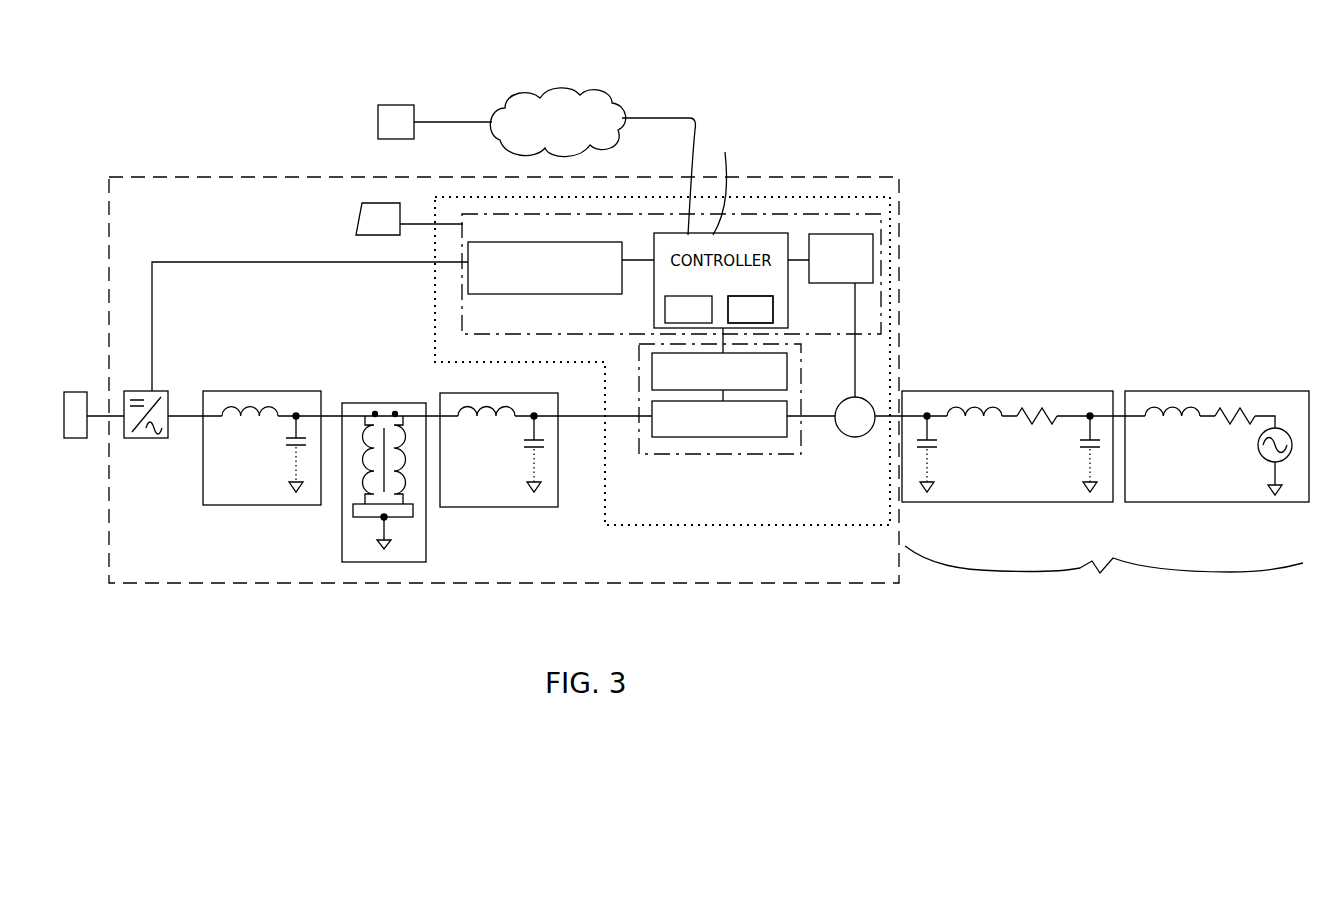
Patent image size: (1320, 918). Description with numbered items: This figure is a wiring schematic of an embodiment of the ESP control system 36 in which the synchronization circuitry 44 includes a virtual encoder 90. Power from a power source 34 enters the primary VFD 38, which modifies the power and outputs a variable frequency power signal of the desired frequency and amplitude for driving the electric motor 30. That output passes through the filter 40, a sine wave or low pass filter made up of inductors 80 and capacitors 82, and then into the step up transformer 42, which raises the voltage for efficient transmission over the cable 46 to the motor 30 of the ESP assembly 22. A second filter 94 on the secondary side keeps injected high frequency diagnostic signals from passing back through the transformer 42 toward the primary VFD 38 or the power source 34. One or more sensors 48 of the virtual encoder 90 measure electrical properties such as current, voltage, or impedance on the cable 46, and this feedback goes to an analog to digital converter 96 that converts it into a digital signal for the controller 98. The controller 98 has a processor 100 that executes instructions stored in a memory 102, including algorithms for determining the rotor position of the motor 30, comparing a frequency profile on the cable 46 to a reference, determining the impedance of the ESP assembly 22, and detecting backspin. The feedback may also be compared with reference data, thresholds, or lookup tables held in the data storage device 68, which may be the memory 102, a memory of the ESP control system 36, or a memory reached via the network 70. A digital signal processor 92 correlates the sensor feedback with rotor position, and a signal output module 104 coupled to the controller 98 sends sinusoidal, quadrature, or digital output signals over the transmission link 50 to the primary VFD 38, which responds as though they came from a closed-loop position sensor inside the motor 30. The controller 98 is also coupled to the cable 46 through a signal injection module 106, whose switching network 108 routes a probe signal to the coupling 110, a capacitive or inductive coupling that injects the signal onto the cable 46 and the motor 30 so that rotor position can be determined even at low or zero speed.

The ESP assembly 22 is at (1104, 578).
The electric motor 30 is at (1218, 389).
The power source 34 is at (77, 386).
The ESP control system 36 is at (828, 177).
The primary VFD 38 is at (128, 386).
The filter 40 is at (260, 389).
The step up transformer 42 is at (383, 401).
The synchronization circuitry 44 is at (545, 561).
The cable 46 is at (1008, 389).
The sensors 48 is at (855, 438).
The transmission link 50 is at (283, 258).
The data storage device 68 is at (378, 123).
The network 70 is at (604, 86).
The inductors 80 is at (250, 405).
The capacitors 82 is at (290, 449).
The virtual encoder 90 is at (700, 530).
The digital signal processor 92 is at (880, 216).
The filter 94 is at (558, 480).
The analog to digital converter 96 is at (843, 284).
The controller 98 is at (677, 176).
The processor 100 is at (676, 298).
The memory 102 is at (735, 298).
The signal output module 104 is at (516, 295).
The signal injection module 106 is at (803, 352).
The switching network 108 is at (640, 362).
The coupling 110 is at (660, 438).